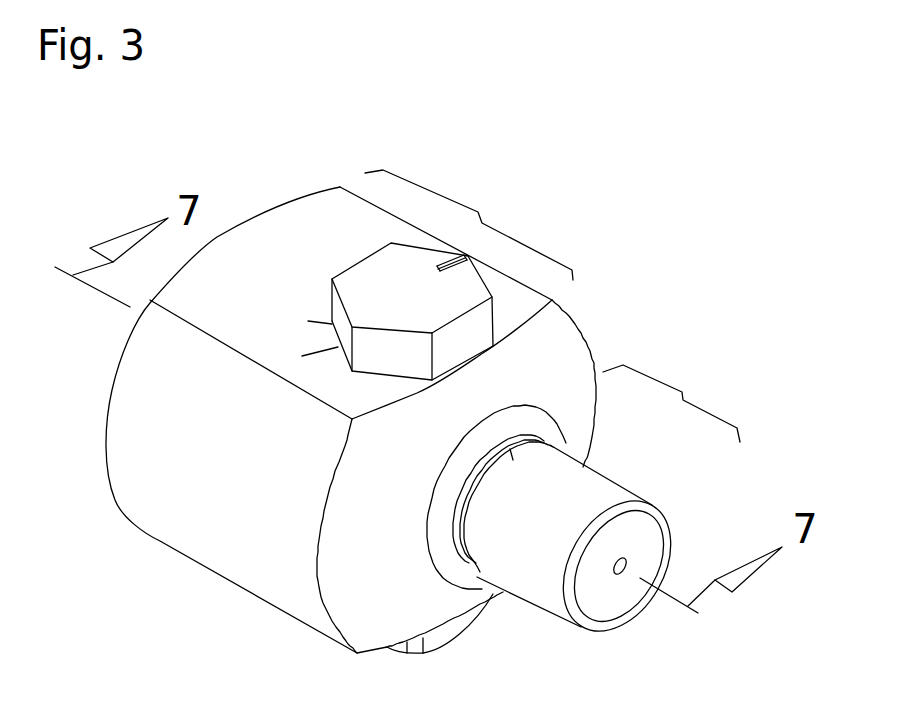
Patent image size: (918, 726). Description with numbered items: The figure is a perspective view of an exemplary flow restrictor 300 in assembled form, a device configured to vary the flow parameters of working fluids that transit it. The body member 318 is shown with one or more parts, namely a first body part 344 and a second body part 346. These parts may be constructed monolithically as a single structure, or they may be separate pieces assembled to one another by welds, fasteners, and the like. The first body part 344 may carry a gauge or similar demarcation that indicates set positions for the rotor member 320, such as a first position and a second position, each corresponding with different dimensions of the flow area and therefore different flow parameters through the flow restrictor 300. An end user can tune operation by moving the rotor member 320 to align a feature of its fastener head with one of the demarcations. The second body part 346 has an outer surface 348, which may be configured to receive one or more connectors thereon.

The flow restrictor 300 is at (560, 170).
The body member 318 is at (225, 622).
The rotor member 320 is at (380, 275).
The first body part 344 is at (469, 225).
The second body part 346 is at (671, 403).
The outer surface 348 is at (595, 488).